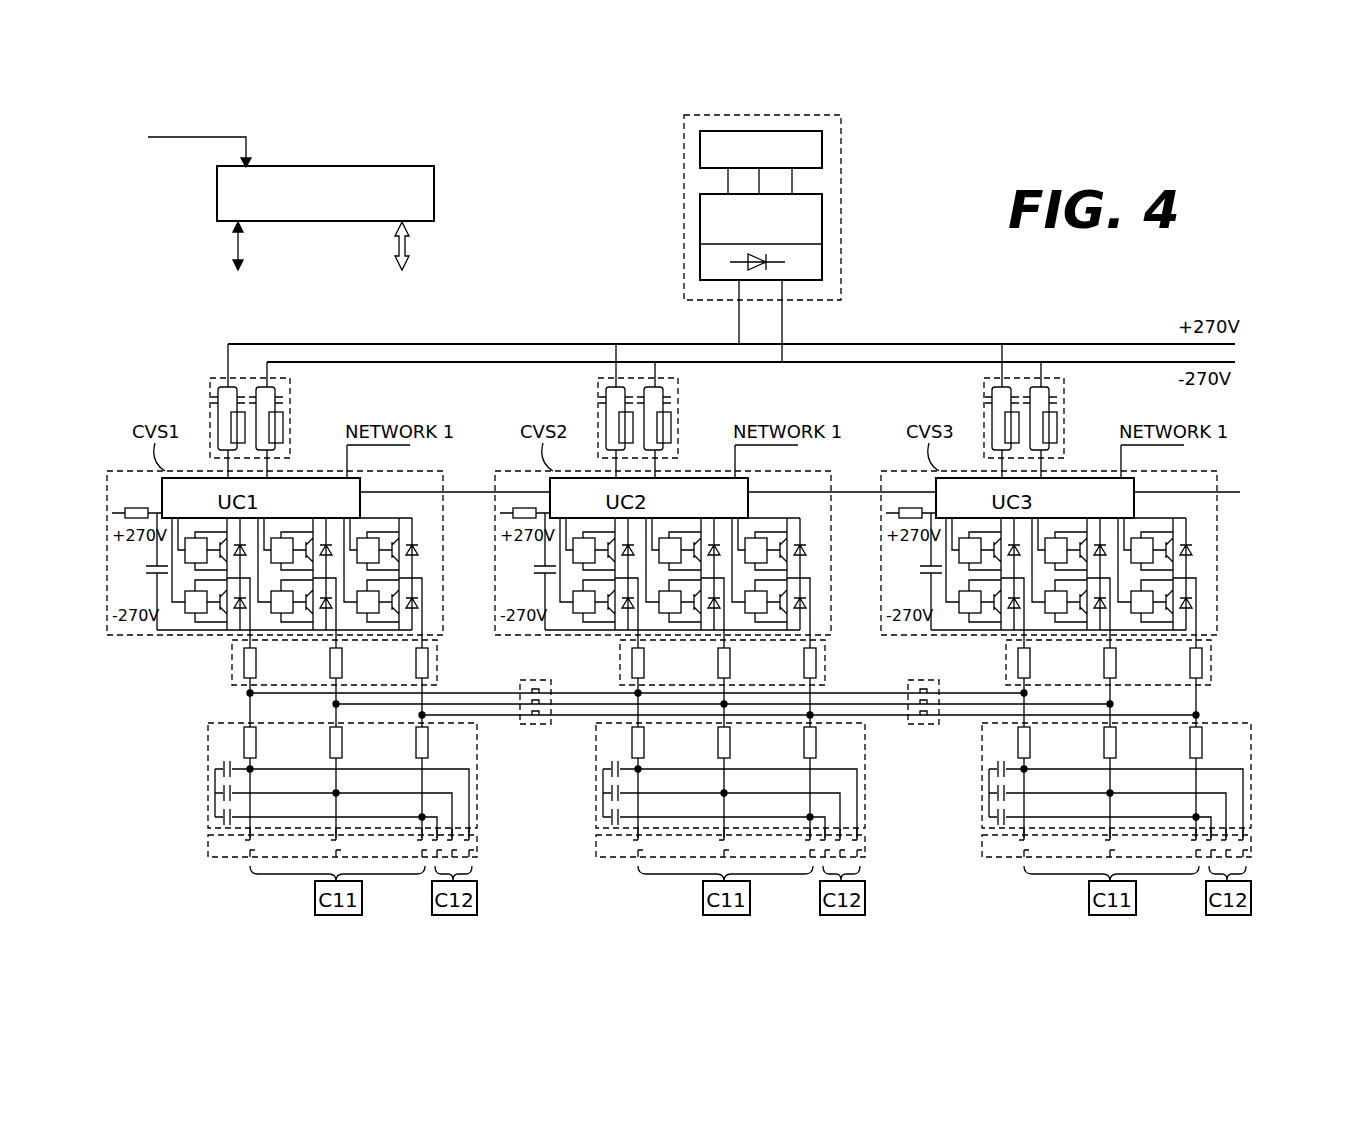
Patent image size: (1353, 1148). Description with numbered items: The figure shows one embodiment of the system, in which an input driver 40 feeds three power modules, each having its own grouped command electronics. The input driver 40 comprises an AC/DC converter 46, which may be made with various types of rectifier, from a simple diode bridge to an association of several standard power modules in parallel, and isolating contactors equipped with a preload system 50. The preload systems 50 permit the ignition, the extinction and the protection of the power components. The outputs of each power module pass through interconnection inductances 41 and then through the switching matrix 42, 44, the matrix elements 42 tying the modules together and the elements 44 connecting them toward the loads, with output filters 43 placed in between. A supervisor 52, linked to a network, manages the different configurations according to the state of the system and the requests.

The supervisor 52 is at (430, 190).
The input driver 40 is at (794, 238).
The AC/DC converter 46 is at (822, 232).
The preload system 50 is at (664, 411).
The interconnection inductances 41 is at (747, 662).
The switching matrix 42 is at (756, 692).
The output filters 43 is at (758, 780).
The switching matrix 44 is at (729, 872).